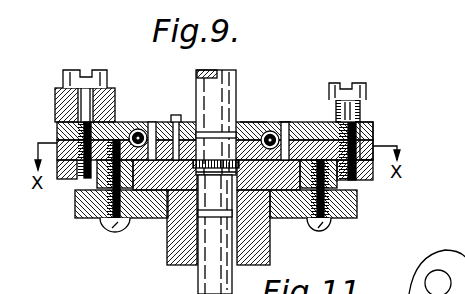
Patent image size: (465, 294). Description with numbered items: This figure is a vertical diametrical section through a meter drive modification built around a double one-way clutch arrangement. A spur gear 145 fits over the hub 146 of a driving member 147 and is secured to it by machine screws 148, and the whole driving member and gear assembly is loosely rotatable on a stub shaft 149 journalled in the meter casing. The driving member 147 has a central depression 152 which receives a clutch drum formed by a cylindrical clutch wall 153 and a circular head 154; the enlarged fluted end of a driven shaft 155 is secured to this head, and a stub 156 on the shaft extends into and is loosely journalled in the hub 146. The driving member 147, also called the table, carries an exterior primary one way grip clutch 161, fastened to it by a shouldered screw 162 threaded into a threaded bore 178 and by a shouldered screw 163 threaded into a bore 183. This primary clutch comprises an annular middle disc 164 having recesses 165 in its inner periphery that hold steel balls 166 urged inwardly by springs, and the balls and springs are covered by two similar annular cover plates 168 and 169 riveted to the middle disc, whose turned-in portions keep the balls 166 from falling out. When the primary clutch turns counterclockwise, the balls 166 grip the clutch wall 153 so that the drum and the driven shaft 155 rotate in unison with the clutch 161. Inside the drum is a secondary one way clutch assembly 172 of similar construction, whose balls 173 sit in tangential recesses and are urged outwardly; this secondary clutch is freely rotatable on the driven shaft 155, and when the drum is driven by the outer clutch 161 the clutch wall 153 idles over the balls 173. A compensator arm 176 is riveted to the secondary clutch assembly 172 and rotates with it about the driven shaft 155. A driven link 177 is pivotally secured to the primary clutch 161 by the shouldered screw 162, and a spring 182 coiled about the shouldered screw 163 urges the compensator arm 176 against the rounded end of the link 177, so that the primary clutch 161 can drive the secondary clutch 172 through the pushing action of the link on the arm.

The spur gear 145 is at (357, 218).
The hub 146 is at (170, 255).
The driving member 147 is at (373, 180).
The machine screws 148 is at (328, 228).
The stub shaft 149 is at (213, 258).
The central depression 152 is at (303, 170).
The cylindrical clutch wall 153 is at (288, 120).
The circular head 154 is at (123, 222).
The driven shaft 155 is at (233, 78).
The stub 156 is at (175, 229).
The primary one way grip clutch 161 is at (370, 122).
The shouldered screw 162 is at (100, 71).
The shouldered screw 163 is at (358, 86).
The annular middle disc 164 is at (375, 138).
The recesses 165 is at (128, 122).
The steel balls 166 is at (141, 128).
The annular cover plate 168 is at (280, 132).
The annular cover plate 169 is at (373, 147).
The secondary one way clutch assembly 172 is at (182, 115).
The balls 173 is at (281, 120).
The compensator arm 176 is at (254, 122).
The driven link 177 is at (57, 98).
The threaded bore 178 is at (73, 182).
The spring 182 is at (320, 97).
The bore 183 is at (362, 183).